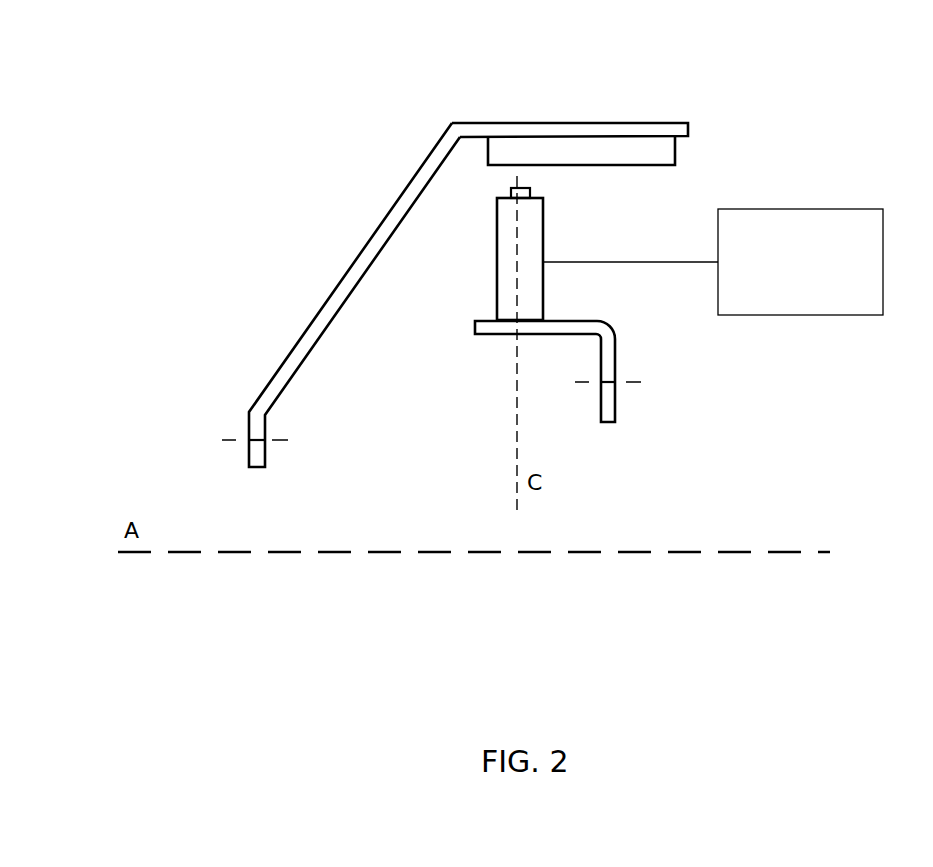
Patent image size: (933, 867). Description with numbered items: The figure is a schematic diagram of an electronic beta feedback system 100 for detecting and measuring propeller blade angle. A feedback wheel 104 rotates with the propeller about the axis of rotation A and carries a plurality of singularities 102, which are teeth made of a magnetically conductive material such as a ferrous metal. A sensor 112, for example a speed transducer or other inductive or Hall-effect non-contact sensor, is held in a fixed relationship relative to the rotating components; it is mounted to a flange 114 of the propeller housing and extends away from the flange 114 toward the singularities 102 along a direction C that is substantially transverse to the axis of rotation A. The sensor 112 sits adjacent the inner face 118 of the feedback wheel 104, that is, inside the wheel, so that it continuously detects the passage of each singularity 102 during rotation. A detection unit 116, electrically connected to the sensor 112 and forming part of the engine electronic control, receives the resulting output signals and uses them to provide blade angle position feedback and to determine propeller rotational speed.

The electronic beta feedback system 100 is at (280, 104).
The singularity 102 is at (565, 149).
The feedback wheel 104 is at (266, 388).
The sensor 112 is at (497, 245).
The flange 114 is at (475, 327).
The detection unit 116 is at (842, 209).
The inner face 118 is at (675, 132).